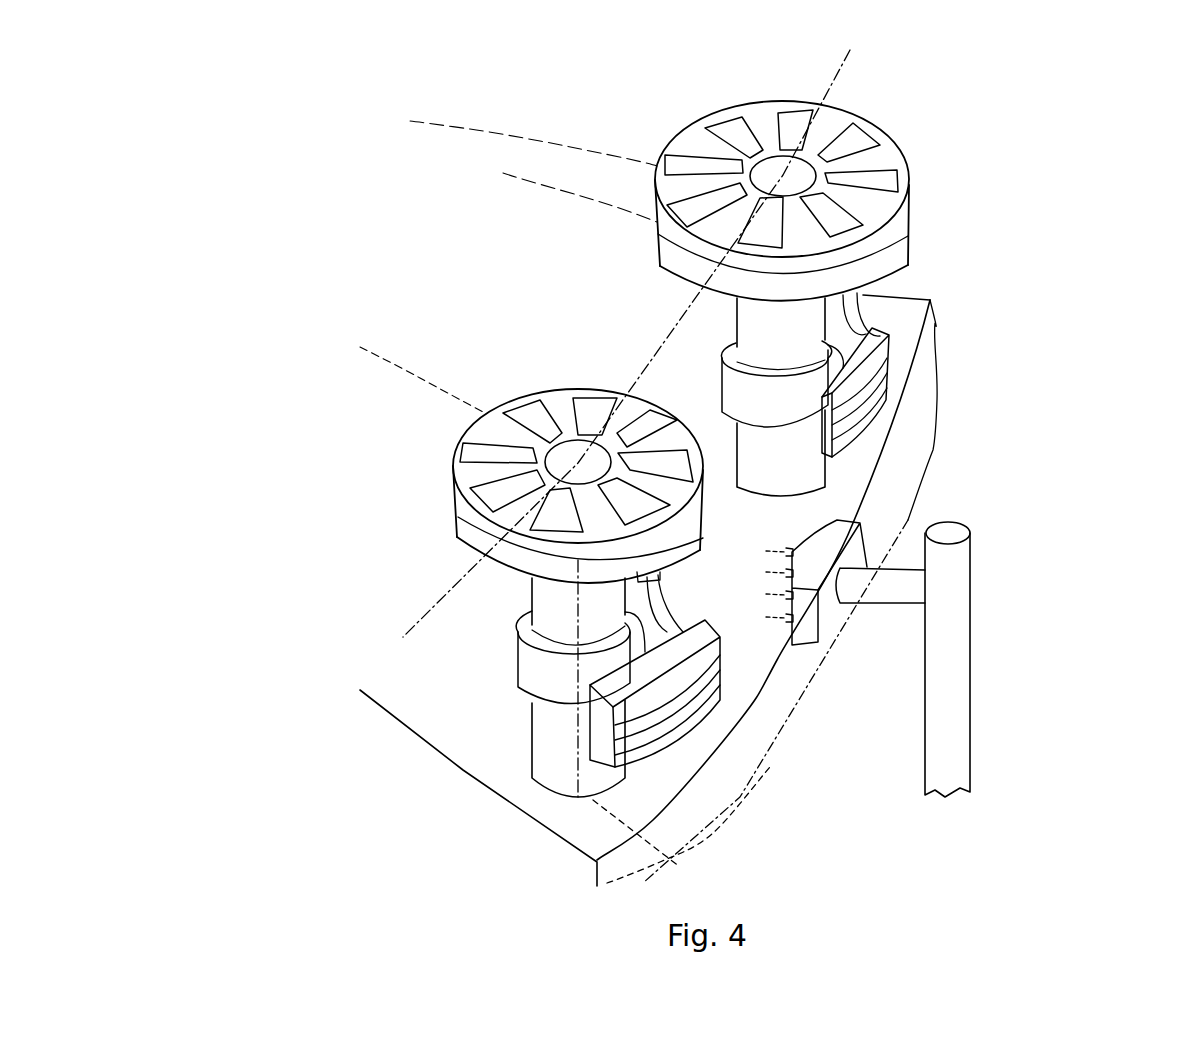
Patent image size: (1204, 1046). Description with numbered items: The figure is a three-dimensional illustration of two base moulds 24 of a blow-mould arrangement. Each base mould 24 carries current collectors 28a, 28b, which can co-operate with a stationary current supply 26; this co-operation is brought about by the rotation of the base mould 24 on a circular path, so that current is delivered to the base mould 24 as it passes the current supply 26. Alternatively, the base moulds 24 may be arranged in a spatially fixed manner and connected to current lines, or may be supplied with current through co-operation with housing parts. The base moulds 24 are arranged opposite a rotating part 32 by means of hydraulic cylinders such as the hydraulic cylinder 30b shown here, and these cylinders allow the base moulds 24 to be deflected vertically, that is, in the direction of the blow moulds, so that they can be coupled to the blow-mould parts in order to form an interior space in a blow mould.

The base mould 24 is at (648, 242).
The stationary current supply 26 is at (803, 613).
The current collector 28a is at (680, 688).
The current collector 28b is at (884, 383).
The hydraulic cylinder 30b is at (745, 330).
The rotating part 32 is at (438, 643).